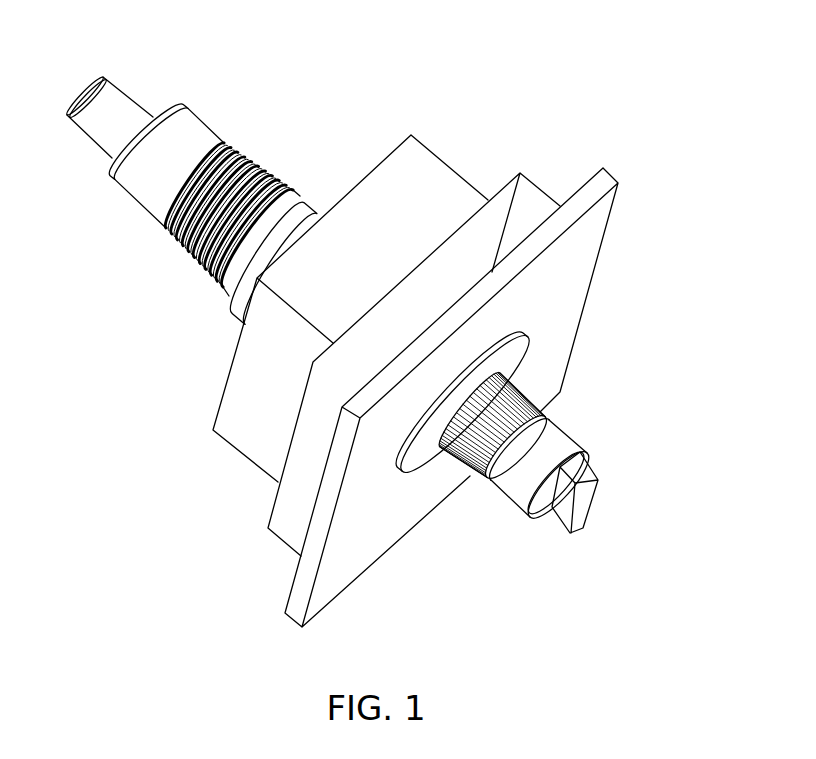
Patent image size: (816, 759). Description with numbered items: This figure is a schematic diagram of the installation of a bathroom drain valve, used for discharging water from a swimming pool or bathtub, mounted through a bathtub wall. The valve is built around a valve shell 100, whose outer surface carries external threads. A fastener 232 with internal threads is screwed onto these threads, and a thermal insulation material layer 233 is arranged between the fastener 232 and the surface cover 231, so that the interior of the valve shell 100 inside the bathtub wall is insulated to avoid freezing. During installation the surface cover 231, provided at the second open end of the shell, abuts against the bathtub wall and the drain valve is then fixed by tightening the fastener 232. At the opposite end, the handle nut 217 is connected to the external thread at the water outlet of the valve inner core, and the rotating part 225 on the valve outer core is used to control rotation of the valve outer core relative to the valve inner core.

The valve shell 100 is at (293, 194).
The fastener 232 is at (302, 236).
The thermal insulation material layer 233 is at (462, 250).
The surface cover 231 is at (515, 362).
The rotating part 225 is at (545, 417).
The handle nut 217 is at (560, 497).